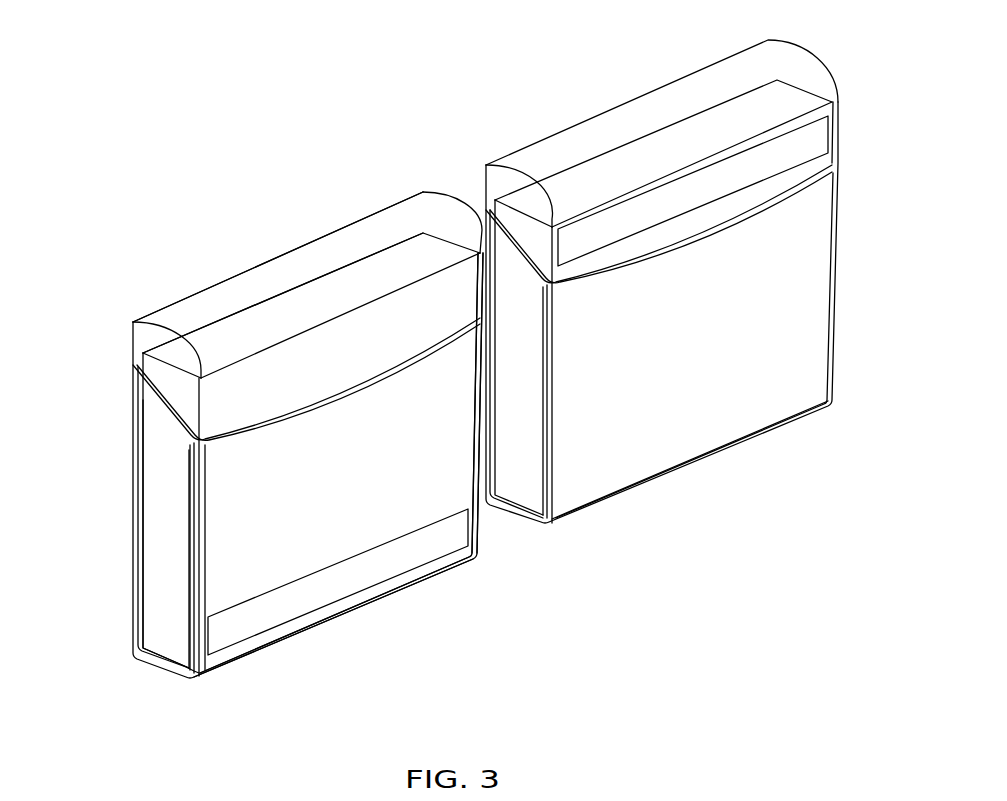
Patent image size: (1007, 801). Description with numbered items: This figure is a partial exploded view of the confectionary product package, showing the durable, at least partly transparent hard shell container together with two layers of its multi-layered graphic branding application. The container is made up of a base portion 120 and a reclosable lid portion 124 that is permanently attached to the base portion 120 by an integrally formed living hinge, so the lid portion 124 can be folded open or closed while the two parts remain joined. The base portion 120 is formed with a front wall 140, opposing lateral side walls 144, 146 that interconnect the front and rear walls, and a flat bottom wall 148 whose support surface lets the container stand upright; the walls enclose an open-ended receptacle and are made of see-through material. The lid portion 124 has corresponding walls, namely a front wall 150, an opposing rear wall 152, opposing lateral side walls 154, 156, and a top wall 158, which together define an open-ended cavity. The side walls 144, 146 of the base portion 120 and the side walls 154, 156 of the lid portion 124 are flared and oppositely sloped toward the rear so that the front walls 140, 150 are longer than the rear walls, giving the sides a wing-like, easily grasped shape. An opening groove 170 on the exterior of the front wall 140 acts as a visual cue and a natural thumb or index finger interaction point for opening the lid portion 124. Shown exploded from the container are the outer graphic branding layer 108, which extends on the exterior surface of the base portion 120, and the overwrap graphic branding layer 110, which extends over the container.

The outer graphic branding layer 108 is at (278, 604).
The overwrap graphic branding layer 110 is at (611, 499).
The base portion 120 is at (131, 659).
The reclosable lid portion 124 is at (128, 317).
The front wall 140 is at (369, 502).
The lateral side wall 144 is at (162, 610).
The lateral side wall 146 is at (480, 542).
The bottom wall 148 is at (310, 637).
The front wall 150 is at (238, 410).
The rear wall 152 is at (213, 284).
The lateral side wall 154 is at (138, 326).
The lateral side wall 156 is at (428, 192).
The top wall 158 is at (282, 266).
The opening groove 170 is at (327, 404).